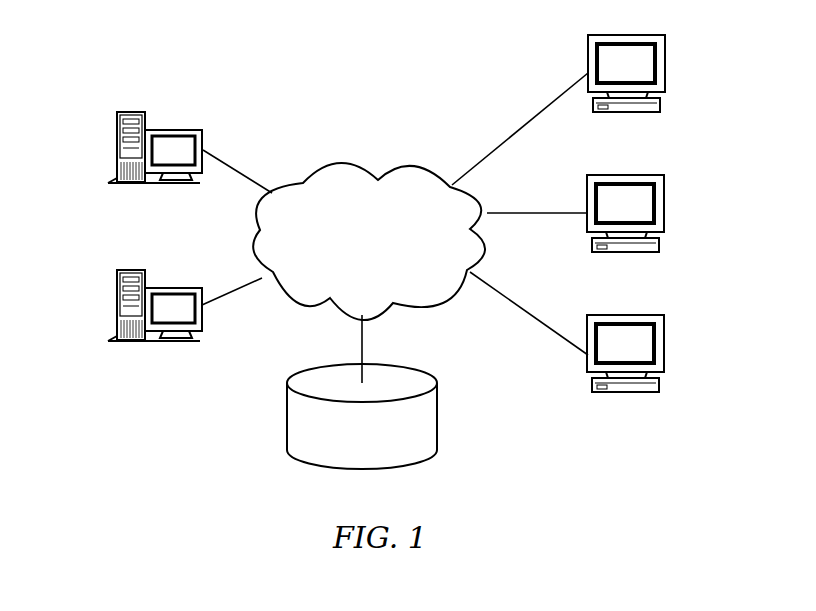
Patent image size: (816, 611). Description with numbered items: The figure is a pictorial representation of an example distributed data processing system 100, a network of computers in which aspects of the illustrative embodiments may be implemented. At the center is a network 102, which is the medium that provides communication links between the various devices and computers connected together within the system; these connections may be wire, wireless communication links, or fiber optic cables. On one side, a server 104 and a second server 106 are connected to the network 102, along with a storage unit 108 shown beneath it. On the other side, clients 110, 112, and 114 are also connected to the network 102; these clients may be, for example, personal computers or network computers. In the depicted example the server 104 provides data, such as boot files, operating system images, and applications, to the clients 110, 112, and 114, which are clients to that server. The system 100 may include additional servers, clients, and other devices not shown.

The distributed data processing system 100 is at (450, 76).
The network 102 is at (347, 163).
The server 104 is at (117, 149).
The server 106 is at (118, 307).
The storage unit 108 is at (287, 415).
The client 110 is at (665, 72).
The client 112 is at (663, 213).
The client 114 is at (663, 355).